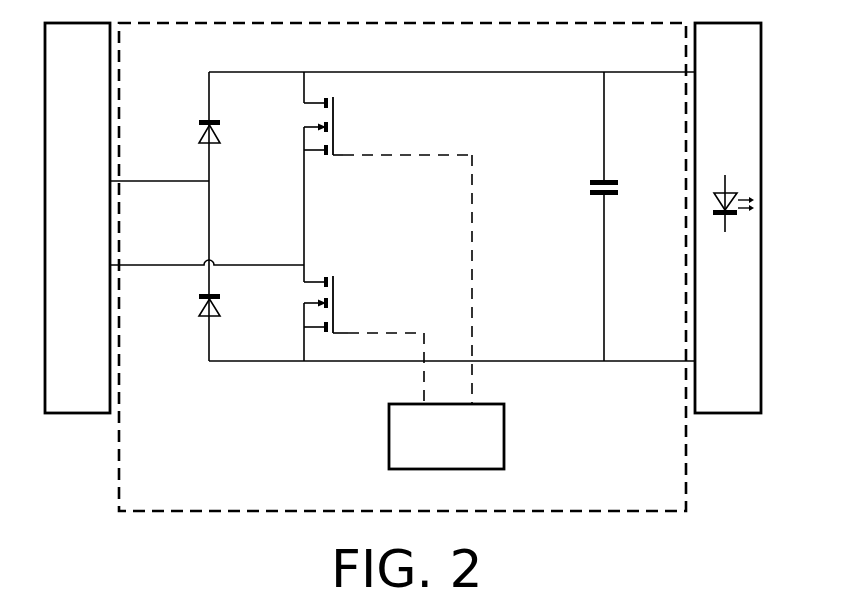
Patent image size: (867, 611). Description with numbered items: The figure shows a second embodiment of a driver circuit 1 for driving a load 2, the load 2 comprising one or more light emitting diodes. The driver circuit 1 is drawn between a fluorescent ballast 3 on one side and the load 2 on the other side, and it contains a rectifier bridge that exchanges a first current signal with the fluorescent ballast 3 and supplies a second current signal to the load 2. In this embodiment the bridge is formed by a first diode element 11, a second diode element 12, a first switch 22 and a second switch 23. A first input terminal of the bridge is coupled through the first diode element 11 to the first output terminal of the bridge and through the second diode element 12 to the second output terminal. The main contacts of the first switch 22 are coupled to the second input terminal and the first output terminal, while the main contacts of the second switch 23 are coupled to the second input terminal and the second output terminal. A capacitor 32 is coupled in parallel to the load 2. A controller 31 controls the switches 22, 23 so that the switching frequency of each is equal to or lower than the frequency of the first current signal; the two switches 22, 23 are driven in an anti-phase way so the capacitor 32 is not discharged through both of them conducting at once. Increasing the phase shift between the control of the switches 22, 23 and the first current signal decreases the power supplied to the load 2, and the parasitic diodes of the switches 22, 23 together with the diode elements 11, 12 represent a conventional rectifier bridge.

The driver circuit 1 is at (145, 53).
The load 2 is at (736, 53).
The fluorescent ballast 3 is at (86, 53).
The first diode element 11 is at (200, 138).
The second diode element 12 is at (200, 311).
The first switch 22 is at (338, 133).
The second switch 23 is at (338, 312).
The controller 31 is at (460, 450).
The capacitor 32 is at (597, 199).